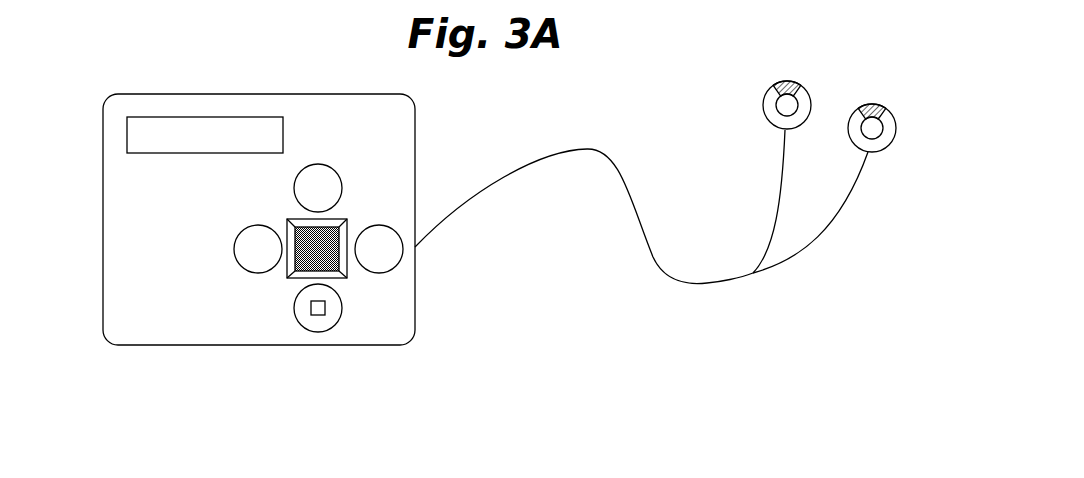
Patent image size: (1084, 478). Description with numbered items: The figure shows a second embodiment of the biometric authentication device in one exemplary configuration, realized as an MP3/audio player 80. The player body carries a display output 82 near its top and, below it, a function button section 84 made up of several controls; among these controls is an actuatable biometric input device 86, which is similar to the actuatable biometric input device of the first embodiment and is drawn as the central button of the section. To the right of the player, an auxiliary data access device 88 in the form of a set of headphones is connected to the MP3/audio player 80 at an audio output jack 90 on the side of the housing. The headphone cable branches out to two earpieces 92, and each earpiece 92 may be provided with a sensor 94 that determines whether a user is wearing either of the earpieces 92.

The MP3/audio player 80 is at (127, 188).
The display output 82 is at (135, 128).
The function button section 84 is at (351, 303).
The actuatable biometric input device 86 is at (378, 281).
The auxiliary data access device 88 is at (562, 153).
The audio output jack 90 is at (425, 245).
The earpiece 92 is at (821, 121).
The sensor 94 is at (872, 104).